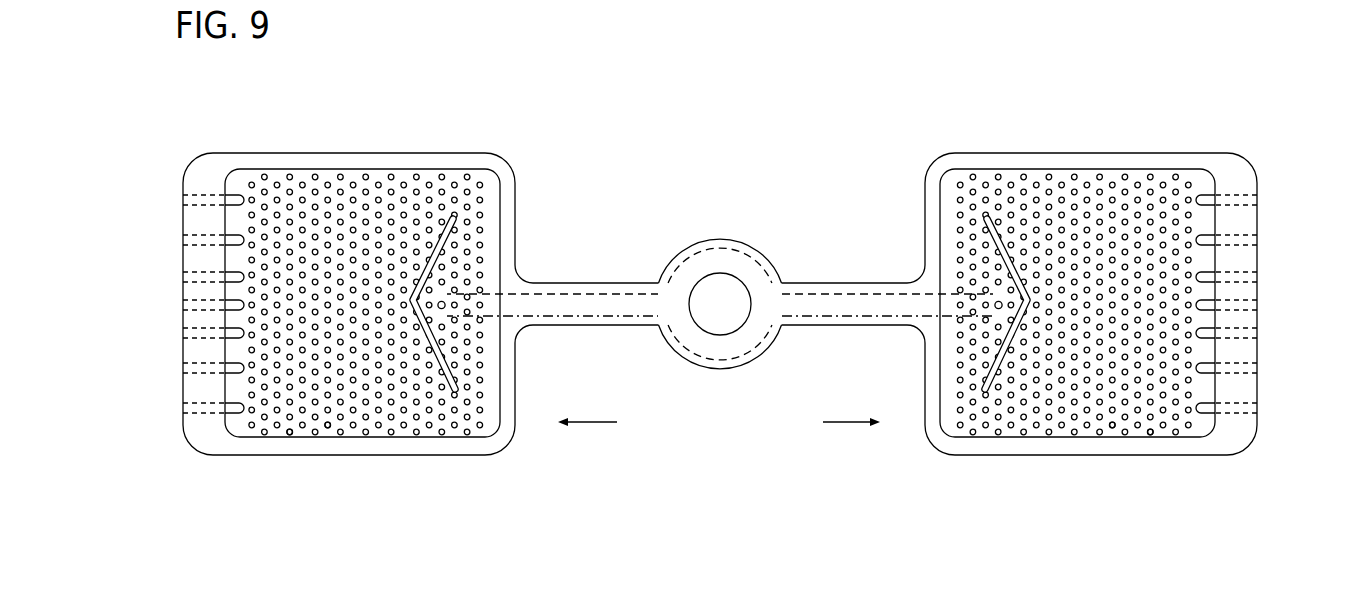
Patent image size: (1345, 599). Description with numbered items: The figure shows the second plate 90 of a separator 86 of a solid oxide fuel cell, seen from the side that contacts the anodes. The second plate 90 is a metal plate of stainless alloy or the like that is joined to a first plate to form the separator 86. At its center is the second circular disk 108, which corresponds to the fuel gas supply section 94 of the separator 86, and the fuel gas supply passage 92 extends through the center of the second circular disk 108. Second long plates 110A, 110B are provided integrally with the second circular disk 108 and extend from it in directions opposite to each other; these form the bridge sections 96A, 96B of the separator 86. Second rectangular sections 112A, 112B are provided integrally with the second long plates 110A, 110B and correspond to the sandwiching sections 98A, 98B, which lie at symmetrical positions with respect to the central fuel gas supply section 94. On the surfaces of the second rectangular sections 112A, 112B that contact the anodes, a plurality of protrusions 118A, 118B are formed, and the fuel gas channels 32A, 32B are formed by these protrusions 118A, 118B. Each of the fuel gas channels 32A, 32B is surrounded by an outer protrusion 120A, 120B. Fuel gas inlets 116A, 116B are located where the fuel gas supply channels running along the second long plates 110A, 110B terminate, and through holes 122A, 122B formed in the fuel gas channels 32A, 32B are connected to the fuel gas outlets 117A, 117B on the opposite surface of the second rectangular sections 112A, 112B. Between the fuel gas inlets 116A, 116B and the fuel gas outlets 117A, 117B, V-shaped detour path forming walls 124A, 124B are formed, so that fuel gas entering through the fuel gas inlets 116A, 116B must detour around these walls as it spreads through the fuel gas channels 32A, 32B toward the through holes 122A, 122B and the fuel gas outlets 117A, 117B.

The second plate 90 is at (720, 298).
The separator 86 is at (285, 97).
The fuel gas supply passage 92 is at (718, 282).
The second circular disk 108 is at (720, 328).
The fuel gas supply section 94 is at (724, 370).
The second long plate 110A is at (854, 266).
The bridge section 96A is at (815, 283).
The second long plate 110B is at (596, 266).
The bridge section 96B is at (605, 283).
The second rectangular section 112A is at (1092, 321).
The sandwiching section 98A is at (1240, 458).
The second rectangular section 112B is at (348, 321).
The sandwiching section 98B is at (200, 458).
The fuel gas inlet 116A is at (996, 300).
The fuel gas inlet 116B is at (444, 300).
The fuel gas outlets 117A is at (1248, 242).
The fuel gas outlets 117B is at (192, 242).
The protrusions 118A is at (1113, 433).
The protrusions 118B is at (327, 433).
The outer protrusion 120A is at (988, 447).
The outer protrusion 120B is at (452, 447).
The through holes 122A is at (1208, 408).
The through holes 122B is at (232, 408).
The V-shaped detour path forming wall 124A is at (1013, 255).
The V-shaped detour path forming wall 124B is at (427, 255).
The fuel gas channel 32A is at (1063, 415).
The fuel gas channel 32B is at (377, 415).